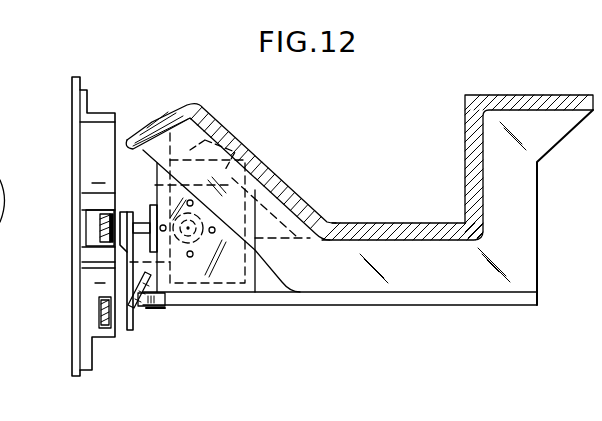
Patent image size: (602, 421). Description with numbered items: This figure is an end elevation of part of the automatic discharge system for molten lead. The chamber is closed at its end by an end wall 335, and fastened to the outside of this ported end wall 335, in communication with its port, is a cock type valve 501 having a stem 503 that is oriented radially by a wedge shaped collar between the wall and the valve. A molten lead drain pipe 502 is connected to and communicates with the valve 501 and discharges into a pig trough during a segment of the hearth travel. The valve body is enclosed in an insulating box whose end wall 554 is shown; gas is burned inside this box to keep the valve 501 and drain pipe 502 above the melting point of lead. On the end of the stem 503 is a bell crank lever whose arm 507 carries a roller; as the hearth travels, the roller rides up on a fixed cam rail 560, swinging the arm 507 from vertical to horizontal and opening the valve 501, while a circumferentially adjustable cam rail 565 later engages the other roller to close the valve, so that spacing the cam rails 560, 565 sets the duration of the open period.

The end wall 335 is at (266, 246).
The cock type valve 501 is at (262, 166).
The molten lead drain pipe 502 is at (139, 313).
The valve stem 503 is at (148, 208).
The bell crank arm 507 is at (122, 267).
The end wall of insulating box 554 is at (232, 280).
The cam rail 560 is at (93, 288).
The cam rail 565 is at (88, 150).